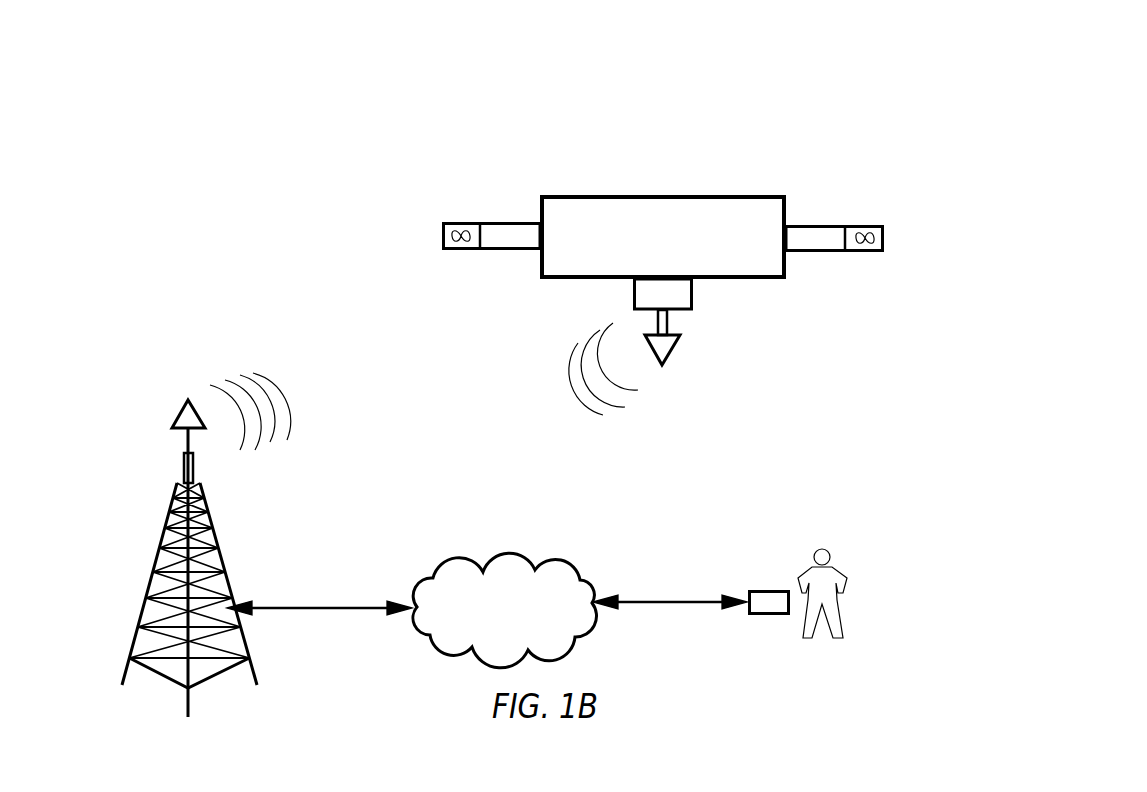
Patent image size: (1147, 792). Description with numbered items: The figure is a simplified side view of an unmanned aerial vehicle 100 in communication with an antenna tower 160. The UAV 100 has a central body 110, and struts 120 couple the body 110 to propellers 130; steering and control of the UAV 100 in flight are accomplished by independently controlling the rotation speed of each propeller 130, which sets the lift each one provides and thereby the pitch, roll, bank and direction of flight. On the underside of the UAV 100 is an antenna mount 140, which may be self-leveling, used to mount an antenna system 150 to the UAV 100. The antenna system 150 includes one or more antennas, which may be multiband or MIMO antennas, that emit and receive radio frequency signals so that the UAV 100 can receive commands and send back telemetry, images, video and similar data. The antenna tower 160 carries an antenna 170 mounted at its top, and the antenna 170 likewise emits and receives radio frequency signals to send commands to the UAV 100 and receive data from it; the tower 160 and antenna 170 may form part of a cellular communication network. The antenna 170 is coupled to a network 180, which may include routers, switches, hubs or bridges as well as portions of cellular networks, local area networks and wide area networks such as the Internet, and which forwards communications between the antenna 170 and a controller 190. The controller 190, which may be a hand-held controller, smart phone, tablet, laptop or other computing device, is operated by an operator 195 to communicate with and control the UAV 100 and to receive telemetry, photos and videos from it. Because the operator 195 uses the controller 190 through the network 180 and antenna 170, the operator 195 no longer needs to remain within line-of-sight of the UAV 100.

The unmanned aerial vehicle 100 is at (938, 115).
The central body 110 is at (643, 195).
The strut 120 is at (502, 222).
The propeller 130 is at (867, 226).
The antenna mount 140 is at (693, 310).
The antenna system 150 is at (673, 355).
The antenna tower 160 is at (227, 606).
The antenna 170 is at (180, 405).
The network 180 is at (505, 610).
The controller 190 is at (766, 590).
The operator 195 is at (822, 621).